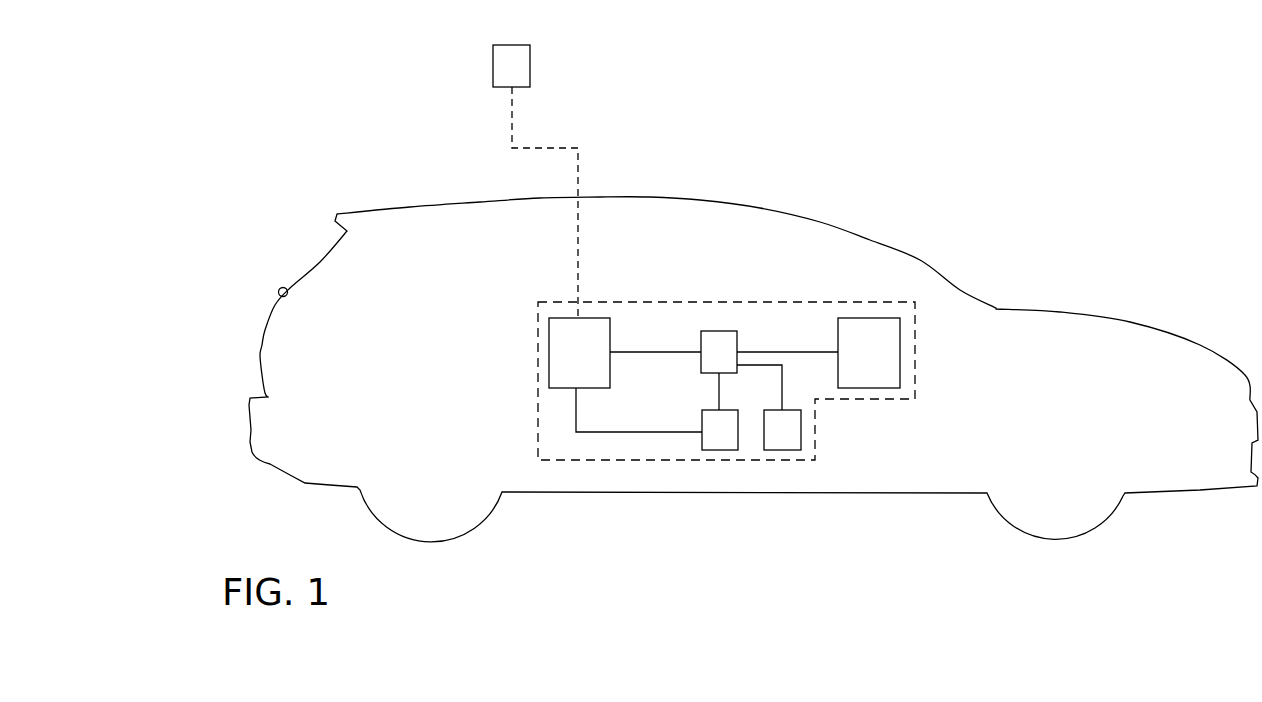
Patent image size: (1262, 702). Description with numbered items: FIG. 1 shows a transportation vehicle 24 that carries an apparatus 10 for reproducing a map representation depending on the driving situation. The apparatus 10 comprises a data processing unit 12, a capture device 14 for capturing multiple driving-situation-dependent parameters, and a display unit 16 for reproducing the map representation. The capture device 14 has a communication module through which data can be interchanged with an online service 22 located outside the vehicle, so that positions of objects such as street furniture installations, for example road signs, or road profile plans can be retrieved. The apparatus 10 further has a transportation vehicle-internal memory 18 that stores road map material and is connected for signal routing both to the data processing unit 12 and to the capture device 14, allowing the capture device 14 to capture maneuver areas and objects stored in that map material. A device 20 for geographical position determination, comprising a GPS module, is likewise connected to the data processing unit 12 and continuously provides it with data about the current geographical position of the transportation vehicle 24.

The apparatus 10 is at (714, 303).
The data processing unit 12 is at (731, 345).
The capture device 14 is at (556, 326).
The display unit 16 is at (889, 326).
The transportation vehicle-internal memory 18 is at (719, 443).
The device for geographical position determination 20 is at (795, 443).
The online service 22 is at (523, 60).
The transportation vehicle 24 is at (657, 197).